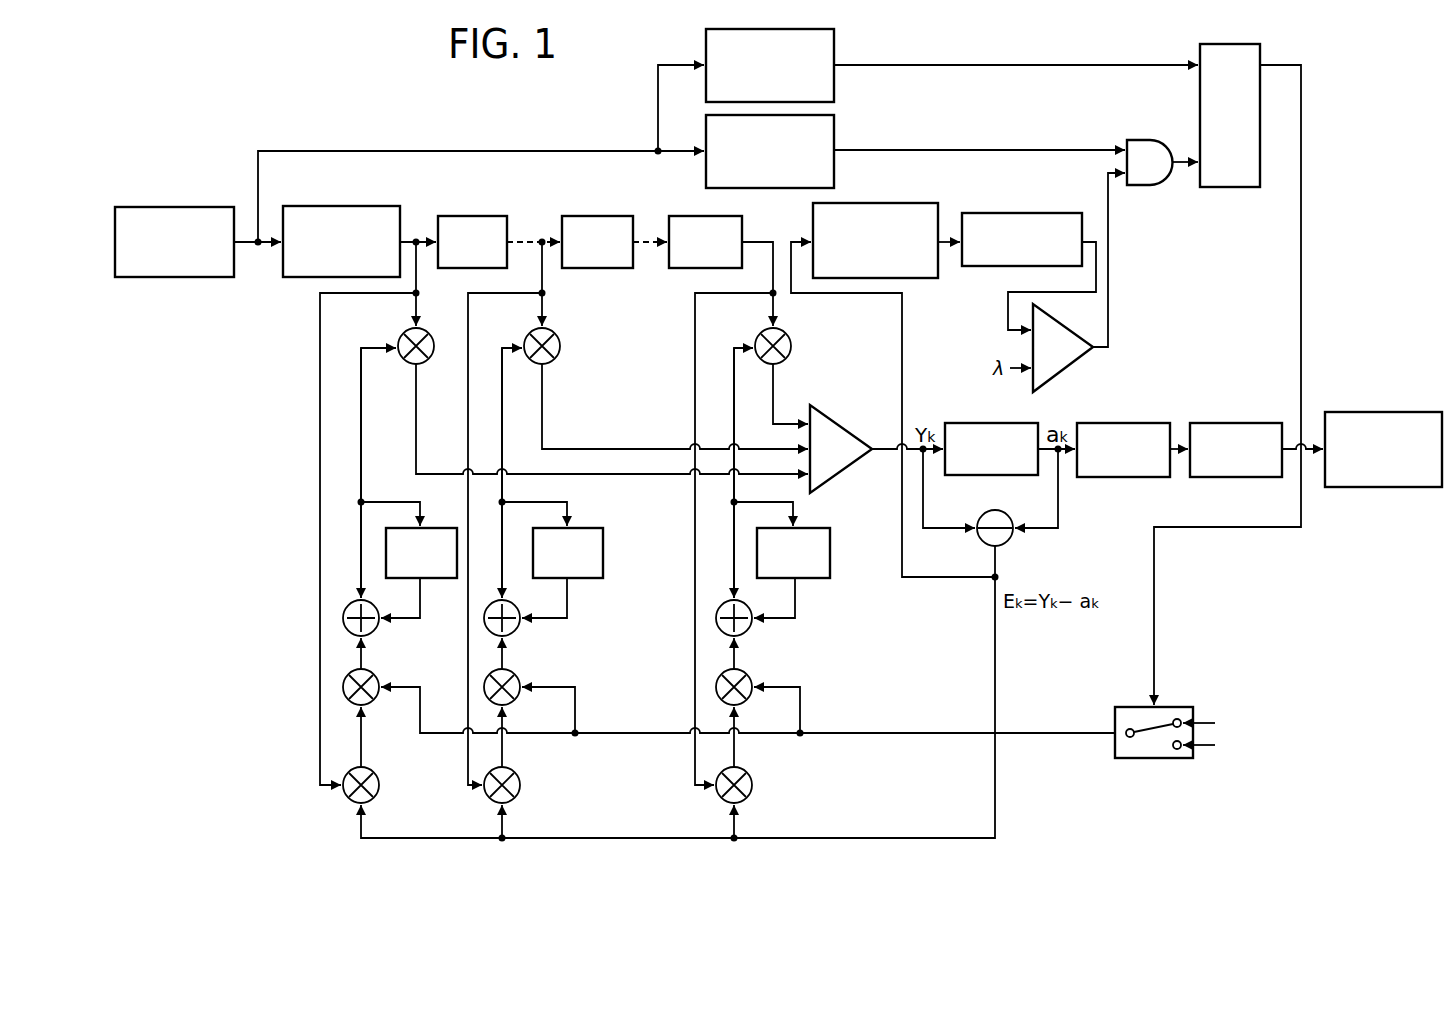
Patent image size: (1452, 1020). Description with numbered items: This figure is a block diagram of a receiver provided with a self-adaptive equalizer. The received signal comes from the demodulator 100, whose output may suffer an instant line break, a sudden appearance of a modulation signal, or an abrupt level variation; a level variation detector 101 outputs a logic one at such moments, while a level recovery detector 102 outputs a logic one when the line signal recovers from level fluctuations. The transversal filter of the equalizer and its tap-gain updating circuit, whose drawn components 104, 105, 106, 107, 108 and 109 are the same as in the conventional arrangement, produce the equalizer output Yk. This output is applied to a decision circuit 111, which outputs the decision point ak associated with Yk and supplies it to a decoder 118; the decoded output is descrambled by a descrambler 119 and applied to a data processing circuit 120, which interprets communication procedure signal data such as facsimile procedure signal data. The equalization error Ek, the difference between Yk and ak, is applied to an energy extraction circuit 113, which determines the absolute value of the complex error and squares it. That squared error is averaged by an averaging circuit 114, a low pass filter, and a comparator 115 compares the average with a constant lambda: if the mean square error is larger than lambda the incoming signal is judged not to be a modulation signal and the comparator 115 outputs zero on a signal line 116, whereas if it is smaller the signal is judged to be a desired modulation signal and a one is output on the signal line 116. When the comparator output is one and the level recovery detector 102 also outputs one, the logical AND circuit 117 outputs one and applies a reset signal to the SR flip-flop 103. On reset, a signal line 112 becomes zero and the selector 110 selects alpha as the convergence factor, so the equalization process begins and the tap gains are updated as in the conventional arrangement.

The demodulator 100 is at (158, 207).
The level variation detector 101 is at (837, 60).
The level recovery detector 102 is at (837, 142).
The SR flip-flop 103 is at (1200, 123).
The complex conjugate converter 104 is at (328, 207).
The delay 105 is at (463, 216).
The multiplier 106 is at (401, 332).
The adder 107 is at (378, 631).
The summer 108 is at (847, 432).
The subtractor 109 is at (1013, 540).
The selector 110 is at (1143, 760).
The decision circuit 111 is at (975, 478).
The signal line 112 is at (1156, 548).
The energy extraction circuit 113 is at (860, 204).
The averaging circuit 114 is at (1003, 213).
The comparator 115 is at (1078, 357).
The signal line 116 is at (1108, 263).
The logical AND circuit 117 is at (1137, 185).
The decoder 118 is at (1110, 478).
The descrambler 119 is at (1222, 478).
The data processing circuit 120 is at (1378, 412).